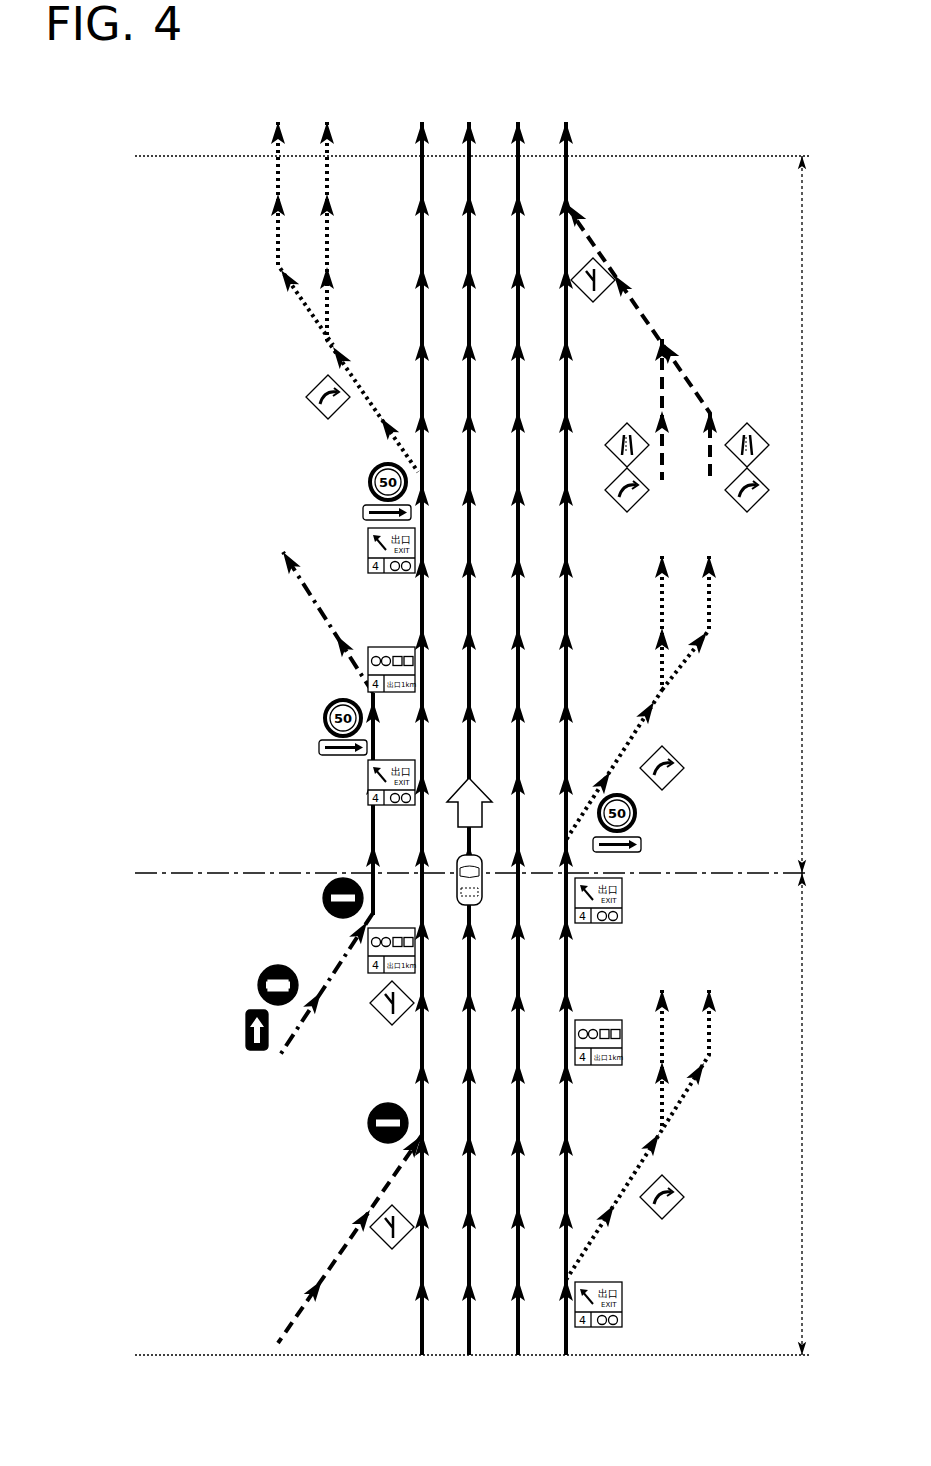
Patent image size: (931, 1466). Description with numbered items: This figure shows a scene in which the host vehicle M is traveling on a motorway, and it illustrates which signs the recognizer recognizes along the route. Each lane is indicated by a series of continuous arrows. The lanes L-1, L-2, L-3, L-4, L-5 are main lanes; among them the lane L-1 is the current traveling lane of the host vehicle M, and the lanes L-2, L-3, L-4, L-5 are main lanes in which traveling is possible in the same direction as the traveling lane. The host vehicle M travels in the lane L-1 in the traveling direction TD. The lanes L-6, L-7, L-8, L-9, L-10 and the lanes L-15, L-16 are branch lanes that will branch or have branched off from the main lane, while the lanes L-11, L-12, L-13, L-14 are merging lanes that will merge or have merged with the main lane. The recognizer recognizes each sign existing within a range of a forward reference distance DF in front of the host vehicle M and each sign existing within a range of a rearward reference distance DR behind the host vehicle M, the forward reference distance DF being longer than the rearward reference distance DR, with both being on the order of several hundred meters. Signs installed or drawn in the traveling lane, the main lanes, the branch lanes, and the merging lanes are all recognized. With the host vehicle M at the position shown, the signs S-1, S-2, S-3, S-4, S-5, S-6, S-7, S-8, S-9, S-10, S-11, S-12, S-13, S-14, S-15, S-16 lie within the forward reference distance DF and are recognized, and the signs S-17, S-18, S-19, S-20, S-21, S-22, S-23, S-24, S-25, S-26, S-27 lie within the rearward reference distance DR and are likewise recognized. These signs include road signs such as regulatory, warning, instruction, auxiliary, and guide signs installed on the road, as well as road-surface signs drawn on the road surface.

The lane L-1 is at (478, 135).
The lane L-2 is at (526, 135).
The lane L-3 is at (574, 135).
The lane L-4 is at (432, 135).
The lane L-5 is at (370, 840).
The lane L-6 is at (711, 592).
The lane L-7 is at (660, 592).
The lane L-8 is at (298, 589).
The lane L-9 is at (334, 140).
The lane L-10 is at (286, 130).
The lane L-11 is at (690, 382).
The lane L-12 is at (660, 382).
The lane L-13 is at (290, 1040).
The lane L-14 is at (290, 1312).
The lane L-15 is at (716, 995).
The lane L-16 is at (666, 990).
The sign S-1 is at (367, 776).
The sign S-2 is at (318, 748).
The sign S-3 is at (323, 718).
The sign S-4 is at (387, 646).
The sign S-5 is at (366, 544).
The sign S-6 is at (362, 512).
The sign S-7 is at (366, 482).
The sign S-8 is at (304, 396).
The sign S-9 is at (642, 845).
The sign S-10 is at (637, 813).
The sign S-11 is at (685, 768).
The sign S-12 is at (742, 512).
The sign S-13 is at (746, 423).
The sign S-14 is at (622, 512).
The sign S-15 is at (640, 458).
The sign S-16 is at (606, 298).
The sign S-17 is at (322, 898).
The sign S-18 is at (366, 947).
The sign S-19 is at (380, 1020).
The sign S-20 is at (258, 985).
The sign S-21 is at (244, 1030).
The sign S-22 is at (366, 1123).
The sign S-23 is at (384, 1245).
The sign S-24 is at (623, 1303).
The sign S-25 is at (660, 1220).
The sign S-26 is at (605, 1066).
The sign S-27 is at (623, 895).
The traveling direction TD is at (457, 803).
The host vehicle M is at (482, 880).
The forward reference distance DF is at (802, 515).
The rearward reference distance DR is at (802, 1115).